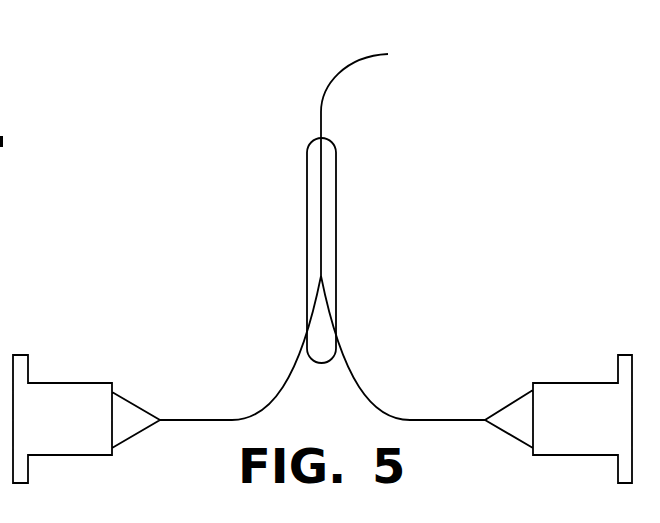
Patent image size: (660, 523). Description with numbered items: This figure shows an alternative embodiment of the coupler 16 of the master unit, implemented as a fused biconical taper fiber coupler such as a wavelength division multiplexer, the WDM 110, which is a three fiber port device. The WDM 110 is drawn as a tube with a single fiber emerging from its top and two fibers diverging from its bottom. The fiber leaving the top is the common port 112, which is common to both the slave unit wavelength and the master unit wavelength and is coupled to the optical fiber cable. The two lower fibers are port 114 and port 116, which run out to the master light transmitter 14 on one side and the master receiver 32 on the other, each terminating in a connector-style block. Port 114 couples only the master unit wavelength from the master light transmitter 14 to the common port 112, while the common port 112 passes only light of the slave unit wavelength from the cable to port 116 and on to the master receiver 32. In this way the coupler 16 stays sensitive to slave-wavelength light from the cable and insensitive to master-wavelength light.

The coupler 16 is at (216, 168).
The WDM 110 is at (333, 148).
The common port 112 is at (368, 56).
The port 114 is at (346, 372).
The port 116 is at (298, 372).
The master receiver 32 is at (55, 383).
The master light transmitter 14 is at (555, 383).